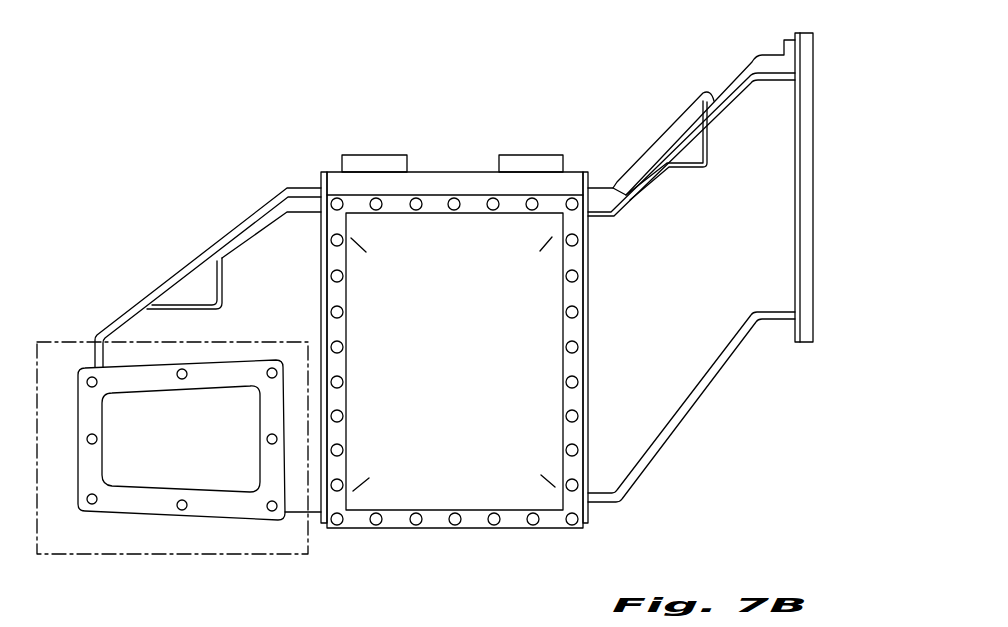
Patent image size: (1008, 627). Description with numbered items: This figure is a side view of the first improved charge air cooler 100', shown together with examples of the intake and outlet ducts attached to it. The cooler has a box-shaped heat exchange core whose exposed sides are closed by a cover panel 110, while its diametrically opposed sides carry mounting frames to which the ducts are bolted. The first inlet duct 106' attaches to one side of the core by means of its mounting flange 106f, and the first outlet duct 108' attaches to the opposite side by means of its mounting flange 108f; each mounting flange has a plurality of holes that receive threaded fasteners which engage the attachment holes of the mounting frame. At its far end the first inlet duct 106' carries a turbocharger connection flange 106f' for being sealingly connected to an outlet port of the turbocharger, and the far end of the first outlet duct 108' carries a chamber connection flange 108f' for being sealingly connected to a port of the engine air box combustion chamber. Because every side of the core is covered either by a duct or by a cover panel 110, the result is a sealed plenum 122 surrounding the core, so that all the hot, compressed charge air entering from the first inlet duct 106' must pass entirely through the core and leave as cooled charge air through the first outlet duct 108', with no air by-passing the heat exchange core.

The first improved charge air cooler 100' is at (447, 301).
The cover panel 110 is at (475, 500).
The sealed plenum 122 is at (417, 168).
The mounting flange of inlet duct 106f is at (281, 322).
The mounting flange of outlet duct 108f is at (621, 298).
The first inlet duct 106' is at (208, 350).
The first outlet duct 108' is at (691, 271).
The turbocharger connection flange 106f' is at (172, 472).
The chamber connection flange 108f' is at (826, 171).